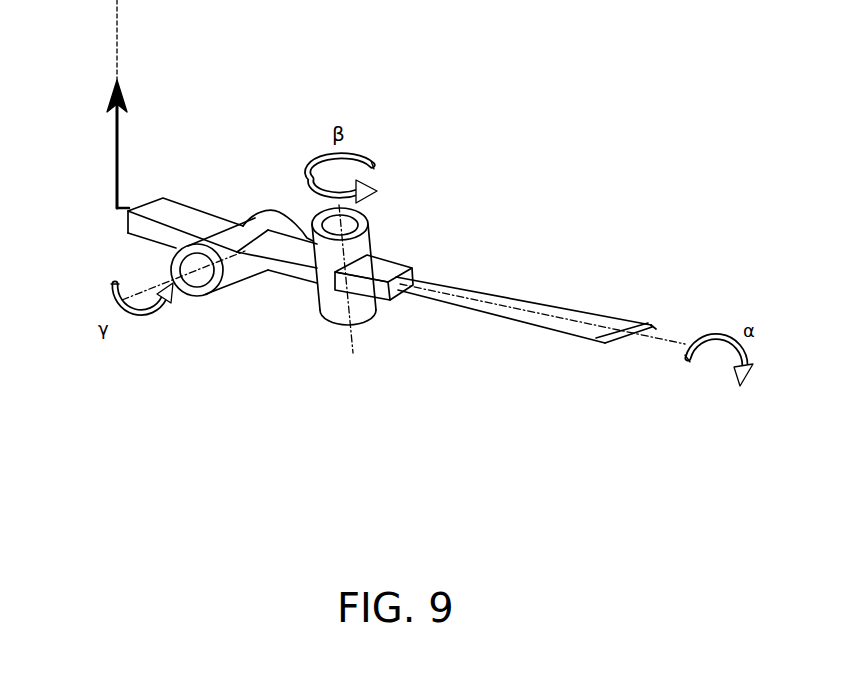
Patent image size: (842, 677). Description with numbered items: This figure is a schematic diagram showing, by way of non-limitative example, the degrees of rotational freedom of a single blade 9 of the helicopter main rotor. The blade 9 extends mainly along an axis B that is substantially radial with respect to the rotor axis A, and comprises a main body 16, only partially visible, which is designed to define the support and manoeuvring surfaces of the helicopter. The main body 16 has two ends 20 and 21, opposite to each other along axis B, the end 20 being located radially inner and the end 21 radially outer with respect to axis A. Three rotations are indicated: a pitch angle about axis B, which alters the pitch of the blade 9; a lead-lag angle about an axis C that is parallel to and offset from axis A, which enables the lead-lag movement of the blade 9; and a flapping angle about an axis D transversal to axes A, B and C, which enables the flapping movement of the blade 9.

The end 20 is at (190, 218).
The main body 16 is at (426, 266).
The blade 9 is at (551, 284).
The end 21 is at (628, 320).
The axis A is at (117, 33).
The axis B is at (683, 345).
The axis C is at (352, 340).
The axis D is at (153, 292).